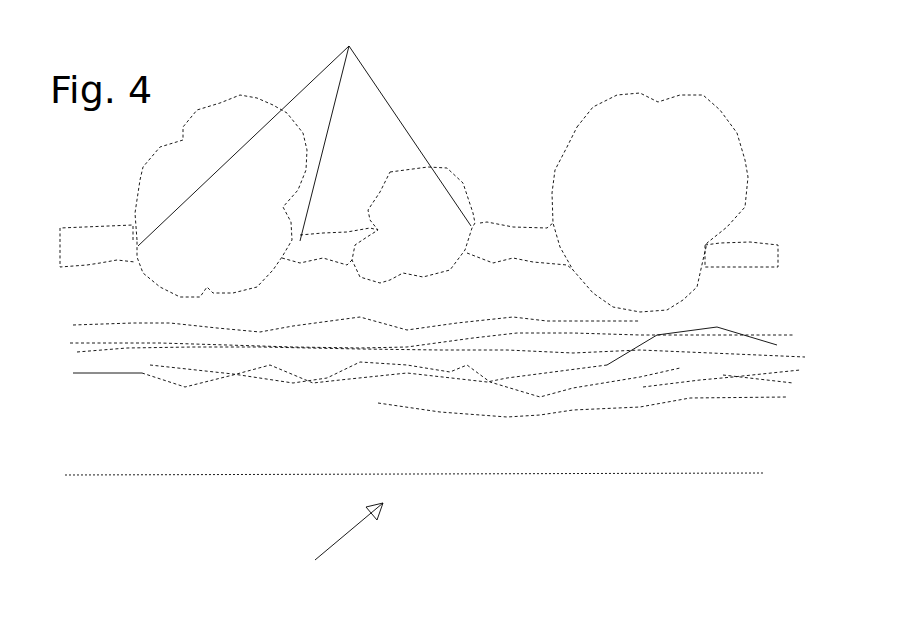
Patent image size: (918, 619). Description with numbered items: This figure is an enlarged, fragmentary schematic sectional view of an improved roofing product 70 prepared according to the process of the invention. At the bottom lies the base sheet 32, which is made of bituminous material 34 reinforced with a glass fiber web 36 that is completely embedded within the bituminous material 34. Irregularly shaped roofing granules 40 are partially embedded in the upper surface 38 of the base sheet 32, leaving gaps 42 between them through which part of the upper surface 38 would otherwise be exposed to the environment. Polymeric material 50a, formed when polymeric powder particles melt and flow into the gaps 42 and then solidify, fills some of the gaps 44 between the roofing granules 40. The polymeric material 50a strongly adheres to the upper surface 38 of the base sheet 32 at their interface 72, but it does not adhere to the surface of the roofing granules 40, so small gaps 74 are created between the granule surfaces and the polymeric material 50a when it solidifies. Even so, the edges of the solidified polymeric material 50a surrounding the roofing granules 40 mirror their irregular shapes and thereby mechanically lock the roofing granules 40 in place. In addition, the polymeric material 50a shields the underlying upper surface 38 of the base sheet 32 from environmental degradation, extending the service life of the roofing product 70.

The base sheet 32 is at (182, 423).
The bituminous material 34 is at (247, 408).
The glass fiber web 36 is at (688, 400).
The upper surface 38 is at (85, 265).
The roofing granules 40 is at (650, 150).
The gaps 42 is at (512, 240).
The gaps 44 is at (335, 262).
The polymeric material 50a is at (110, 238).
The improved roofing product 70 is at (332, 548).
The interface 72 is at (108, 262).
The small gaps 74 is at (304, 130).